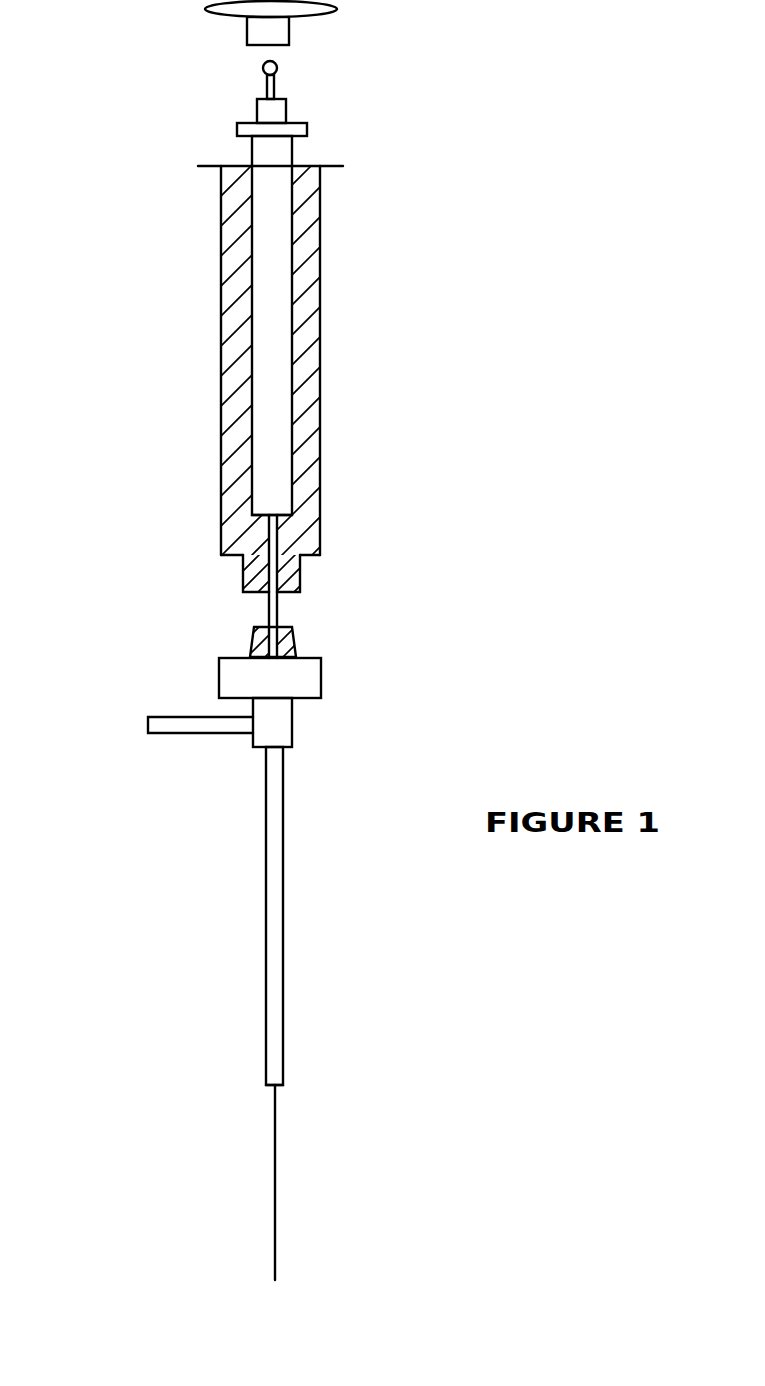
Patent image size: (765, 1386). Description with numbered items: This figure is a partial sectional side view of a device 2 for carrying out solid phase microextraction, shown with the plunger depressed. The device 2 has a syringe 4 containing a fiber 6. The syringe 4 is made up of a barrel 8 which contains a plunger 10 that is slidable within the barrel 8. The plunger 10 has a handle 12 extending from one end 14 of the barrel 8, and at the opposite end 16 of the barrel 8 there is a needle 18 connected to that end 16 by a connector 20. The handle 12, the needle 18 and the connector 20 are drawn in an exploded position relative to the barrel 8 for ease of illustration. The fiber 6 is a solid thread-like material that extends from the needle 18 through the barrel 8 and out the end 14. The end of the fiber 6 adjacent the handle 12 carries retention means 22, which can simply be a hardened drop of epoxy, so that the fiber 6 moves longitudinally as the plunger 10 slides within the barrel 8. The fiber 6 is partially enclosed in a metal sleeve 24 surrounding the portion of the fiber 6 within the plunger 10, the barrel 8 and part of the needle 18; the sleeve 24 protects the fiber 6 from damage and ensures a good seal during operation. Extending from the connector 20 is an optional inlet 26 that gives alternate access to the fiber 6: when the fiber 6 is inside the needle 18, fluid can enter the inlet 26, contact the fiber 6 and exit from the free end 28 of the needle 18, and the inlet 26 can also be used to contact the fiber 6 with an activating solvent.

The device 2 is at (562, 358).
The syringe 4 is at (330, 469).
The fiber 6 is at (275, 1232).
The barrel 8 is at (238, 507).
The plunger 10 is at (268, 403).
The handle 12 is at (205, 9).
The end of barrel 14 is at (221, 166).
The opposite end of barrel 16 is at (238, 556).
The needle 18 is at (273, 1006).
The connector 20 is at (300, 686).
The retention means 22 is at (276, 66).
The metal sleeve 24 is at (276, 86).
The inlet 26 is at (202, 727).
The free end of needle 28 is at (280, 1087).